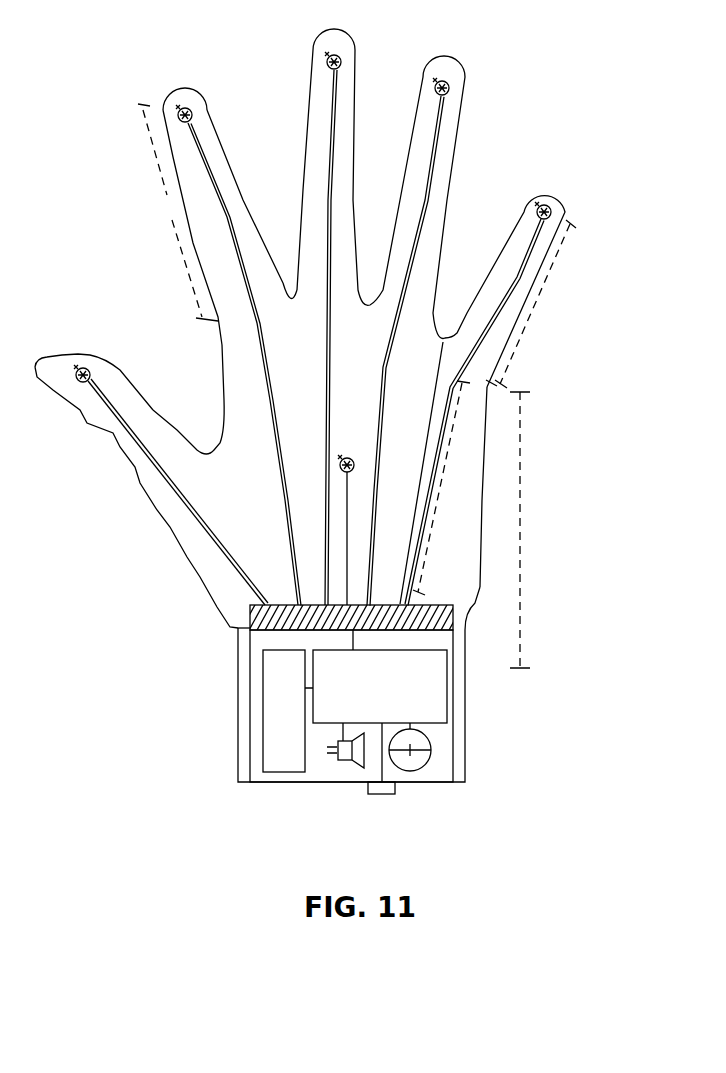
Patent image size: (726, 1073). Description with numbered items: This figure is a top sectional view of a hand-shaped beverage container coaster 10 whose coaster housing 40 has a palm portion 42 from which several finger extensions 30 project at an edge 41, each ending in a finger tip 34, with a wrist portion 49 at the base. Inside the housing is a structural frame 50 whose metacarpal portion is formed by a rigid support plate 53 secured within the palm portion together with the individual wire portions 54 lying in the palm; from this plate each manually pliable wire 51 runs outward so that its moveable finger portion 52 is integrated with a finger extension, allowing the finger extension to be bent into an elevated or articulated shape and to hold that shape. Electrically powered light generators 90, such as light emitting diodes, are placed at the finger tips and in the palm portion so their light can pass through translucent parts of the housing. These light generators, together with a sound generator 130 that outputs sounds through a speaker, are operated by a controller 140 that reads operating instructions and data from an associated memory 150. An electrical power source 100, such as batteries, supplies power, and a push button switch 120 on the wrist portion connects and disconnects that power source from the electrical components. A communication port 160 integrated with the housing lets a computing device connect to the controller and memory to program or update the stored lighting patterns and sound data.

The beverage container coaster 10 is at (90, 180).
The finger extension 30 is at (187, 177).
The finger tip 34 is at (185, 88).
The coaster housing 40 is at (222, 402).
The edge of palm portion 41 is at (288, 293).
The palm portion 42 is at (483, 500).
The wrist portion 49 is at (238, 697).
The structural frame 50 is at (275, 500).
The wire 51 is at (455, 378).
The moveable finger portion 52 is at (515, 275).
The rigid support plate 53 is at (262, 618).
The wire portion 54 is at (430, 490).
The electrically powered light generator 90 is at (190, 112).
The electrical power source 100 is at (412, 762).
The push button switch 120 is at (381, 794).
The sound generator 130 is at (352, 762).
The controller 140 is at (428, 672).
The memory 150 is at (268, 718).
The communication port 160 is at (465, 707).